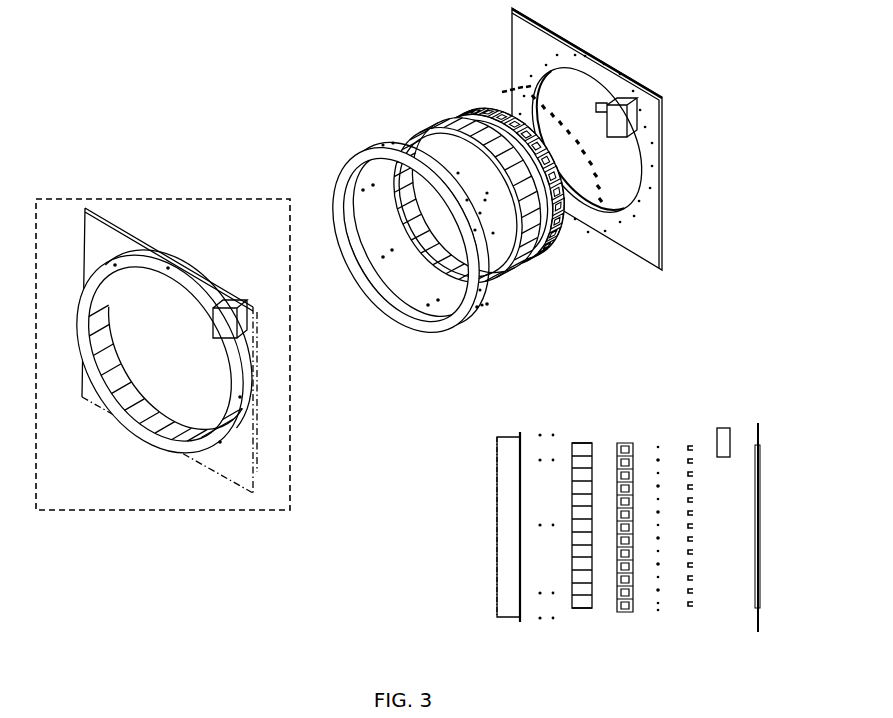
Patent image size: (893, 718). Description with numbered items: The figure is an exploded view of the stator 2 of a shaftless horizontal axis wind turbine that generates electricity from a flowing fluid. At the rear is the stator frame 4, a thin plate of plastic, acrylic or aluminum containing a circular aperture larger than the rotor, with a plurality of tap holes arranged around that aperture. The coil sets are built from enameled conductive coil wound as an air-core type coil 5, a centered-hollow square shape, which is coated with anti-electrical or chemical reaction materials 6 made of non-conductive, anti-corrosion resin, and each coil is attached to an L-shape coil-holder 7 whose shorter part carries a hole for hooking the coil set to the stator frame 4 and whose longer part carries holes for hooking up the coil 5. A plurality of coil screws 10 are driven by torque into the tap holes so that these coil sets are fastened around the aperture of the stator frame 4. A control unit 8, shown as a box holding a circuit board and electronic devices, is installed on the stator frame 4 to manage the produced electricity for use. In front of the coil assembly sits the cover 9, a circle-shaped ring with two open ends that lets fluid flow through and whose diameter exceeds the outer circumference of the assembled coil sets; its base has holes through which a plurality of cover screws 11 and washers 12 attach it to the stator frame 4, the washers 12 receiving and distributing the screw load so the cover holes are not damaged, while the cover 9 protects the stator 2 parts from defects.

The stator 2 is at (148, 198).
The stator frame 4 is at (757, 423).
The air-core type coil 5 is at (532, 270).
The anti-electrical or chemical reaction materials 6 is at (508, 277).
The L-shape coil-holder 7 is at (583, 232).
The control unit 8 is at (724, 428).
The cover 9 is at (510, 467).
The coil screws 10 is at (555, 255).
The cover screws 11 is at (477, 307).
The washers 12 is at (487, 305).